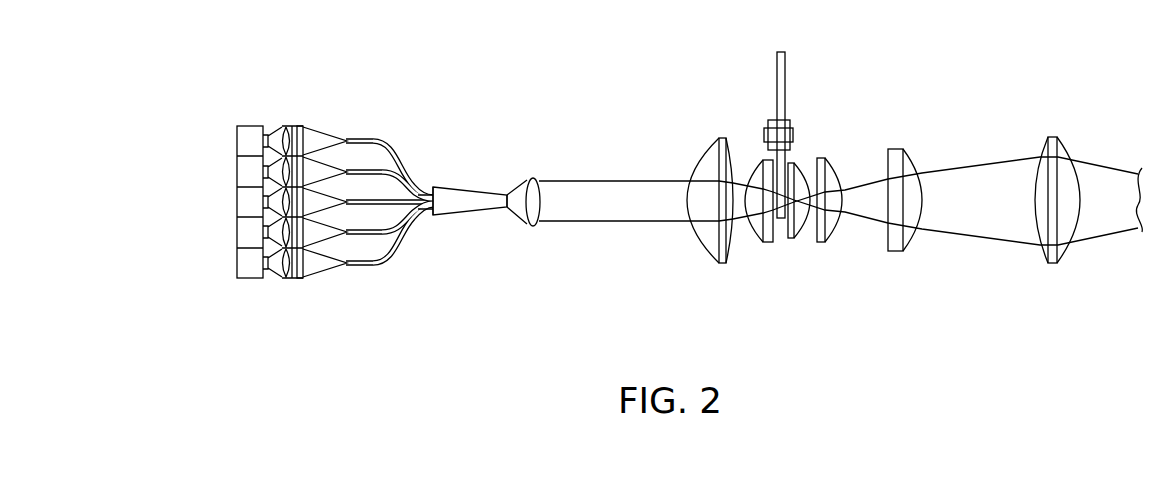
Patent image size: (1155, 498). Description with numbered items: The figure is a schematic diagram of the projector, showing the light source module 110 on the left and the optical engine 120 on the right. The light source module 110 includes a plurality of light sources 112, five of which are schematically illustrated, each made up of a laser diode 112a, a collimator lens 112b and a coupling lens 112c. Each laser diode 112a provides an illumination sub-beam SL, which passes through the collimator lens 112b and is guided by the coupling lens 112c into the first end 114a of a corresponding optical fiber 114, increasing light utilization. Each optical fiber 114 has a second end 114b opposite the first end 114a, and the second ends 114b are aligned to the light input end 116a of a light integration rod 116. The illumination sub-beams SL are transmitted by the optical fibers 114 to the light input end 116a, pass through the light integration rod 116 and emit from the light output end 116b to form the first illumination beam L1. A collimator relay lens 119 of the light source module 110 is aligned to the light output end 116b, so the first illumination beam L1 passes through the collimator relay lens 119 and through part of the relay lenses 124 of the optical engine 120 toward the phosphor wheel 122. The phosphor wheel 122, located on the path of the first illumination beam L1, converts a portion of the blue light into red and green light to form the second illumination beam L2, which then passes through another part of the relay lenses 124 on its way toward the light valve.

The light source module 110 is at (548, 288).
The light source 112 is at (313, 60).
The laser diode 112a is at (250, 134).
The collimator lens 112b is at (287, 132).
The coupling lens 112c is at (302, 132).
The illumination sub-beam SL is at (317, 131).
The optical fiber 114 is at (383, 140).
The first end 114a is at (347, 130).
The second end 114b is at (422, 177).
The light integration rod 116 is at (466, 197).
The light input end 116a is at (436, 180).
The light output end 116b is at (508, 186).
The collimator relay lens 119 is at (534, 203).
The first illumination beam L1 is at (608, 222).
The optical engine 120 is at (1093, 288).
The phosphor wheel 122 is at (781, 78).
The relay lens 124 is at (1050, 150).
The second illumination beam L2 is at (878, 226).